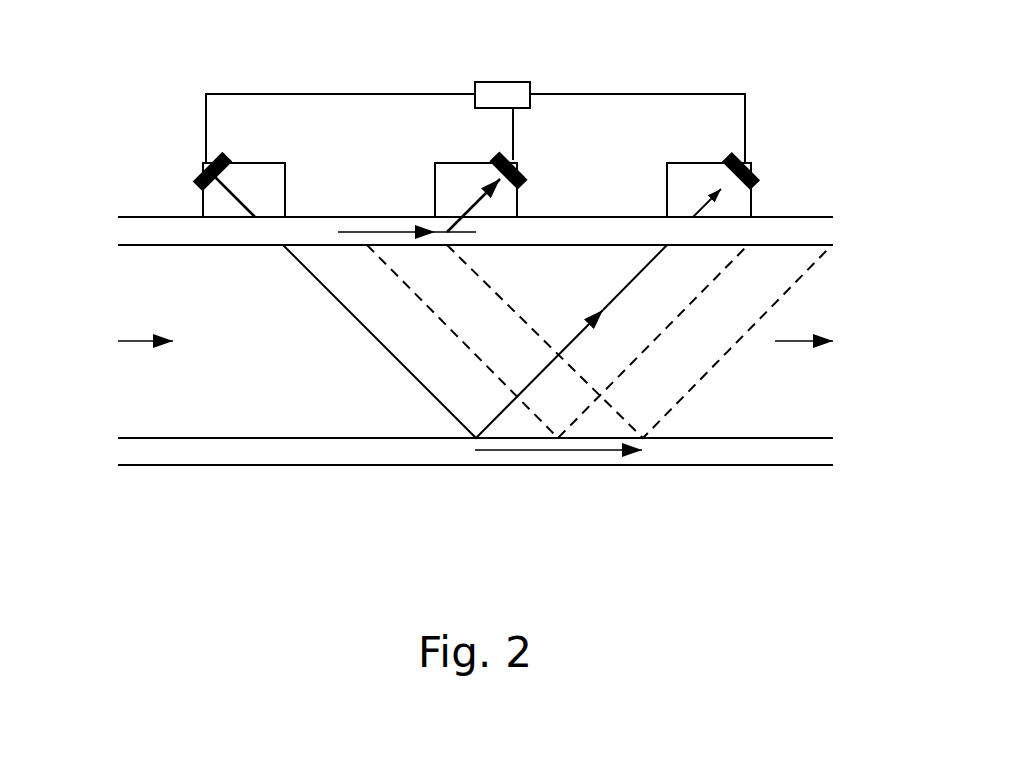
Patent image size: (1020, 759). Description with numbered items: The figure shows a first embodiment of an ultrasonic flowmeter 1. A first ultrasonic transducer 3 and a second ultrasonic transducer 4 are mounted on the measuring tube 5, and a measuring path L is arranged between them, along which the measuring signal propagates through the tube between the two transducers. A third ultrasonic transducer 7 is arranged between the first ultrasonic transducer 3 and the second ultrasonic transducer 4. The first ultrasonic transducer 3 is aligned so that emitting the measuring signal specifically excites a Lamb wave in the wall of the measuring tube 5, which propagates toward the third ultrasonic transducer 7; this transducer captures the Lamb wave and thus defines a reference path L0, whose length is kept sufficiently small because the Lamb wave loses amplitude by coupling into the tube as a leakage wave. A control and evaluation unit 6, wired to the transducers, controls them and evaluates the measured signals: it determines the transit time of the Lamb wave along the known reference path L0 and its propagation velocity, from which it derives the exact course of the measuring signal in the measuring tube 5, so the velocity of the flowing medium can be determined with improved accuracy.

The ultrasonic flowmeter 1 is at (127, 90).
The first ultrasonic transducer 3 is at (202, 203).
The second ultrasonic transducer 4 is at (752, 207).
The measuring tube 5 is at (282, 452).
The control and evaluation unit 6 is at (521, 82).
The third ultrasonic transducer 7 is at (457, 163).
The measuring path L is at (403, 367).
The reference path L0 is at (366, 232).